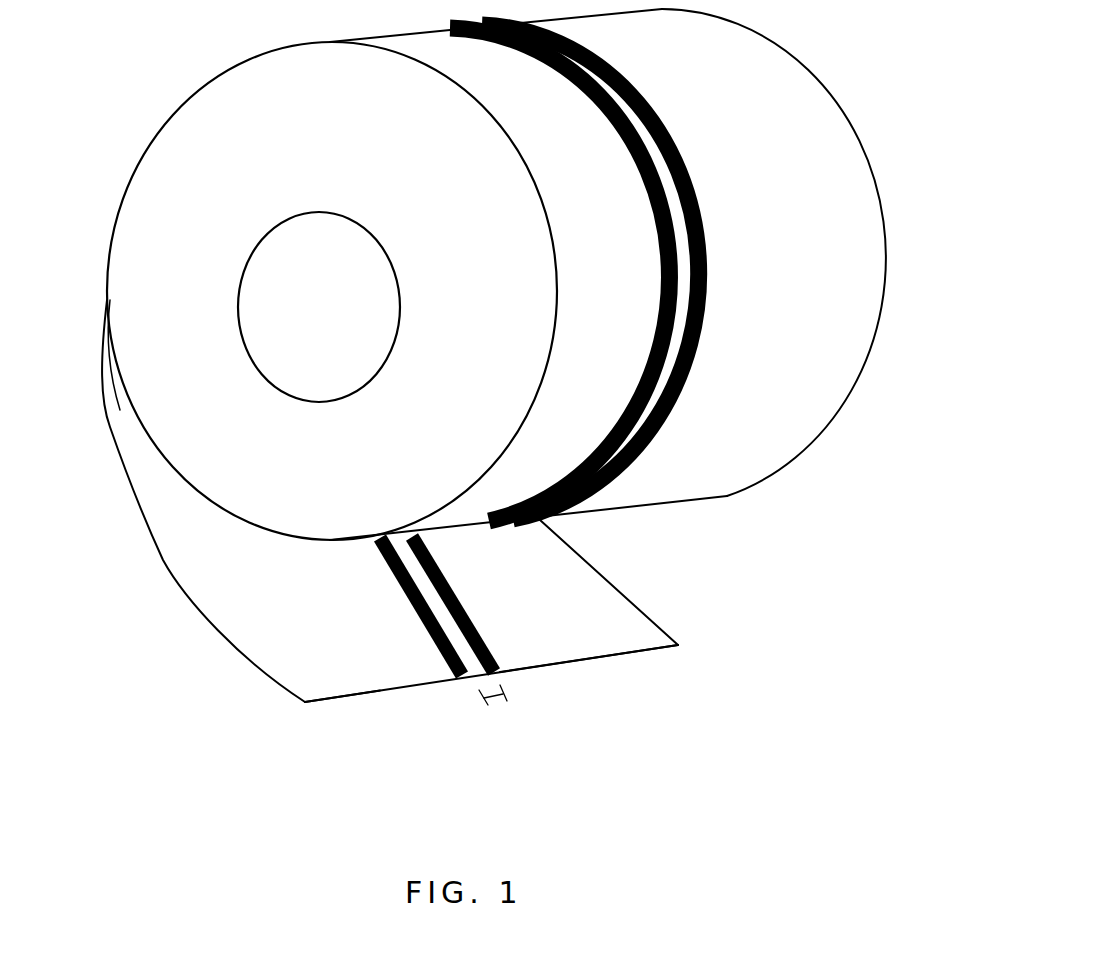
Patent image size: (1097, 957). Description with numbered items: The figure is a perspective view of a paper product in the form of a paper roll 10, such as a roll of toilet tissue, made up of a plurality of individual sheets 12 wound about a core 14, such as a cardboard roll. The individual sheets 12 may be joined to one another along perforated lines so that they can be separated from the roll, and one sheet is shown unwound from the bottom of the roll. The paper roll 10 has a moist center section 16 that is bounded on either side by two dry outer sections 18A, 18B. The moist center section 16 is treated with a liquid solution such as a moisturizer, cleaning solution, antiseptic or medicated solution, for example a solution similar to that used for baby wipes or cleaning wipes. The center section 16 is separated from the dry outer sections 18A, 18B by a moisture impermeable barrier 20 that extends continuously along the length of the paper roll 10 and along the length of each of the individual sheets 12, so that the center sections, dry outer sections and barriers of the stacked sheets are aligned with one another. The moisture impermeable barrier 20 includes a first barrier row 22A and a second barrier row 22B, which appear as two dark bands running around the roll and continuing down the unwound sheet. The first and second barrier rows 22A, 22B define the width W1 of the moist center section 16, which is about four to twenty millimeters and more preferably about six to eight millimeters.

The paper roll 10 is at (828, 282).
The individual sheets 12 is at (180, 590).
The core 14 is at (245, 267).
The moist center section 16 is at (665, 368).
The dry outer section 18A is at (367, 680).
The dry outer section 18B is at (580, 650).
The moisture impermeable barrier 20 is at (660, 127).
The first barrier row 22A is at (403, 597).
The second barrier row 22B is at (465, 603).
The width of the moist center section W1 is at (495, 702).